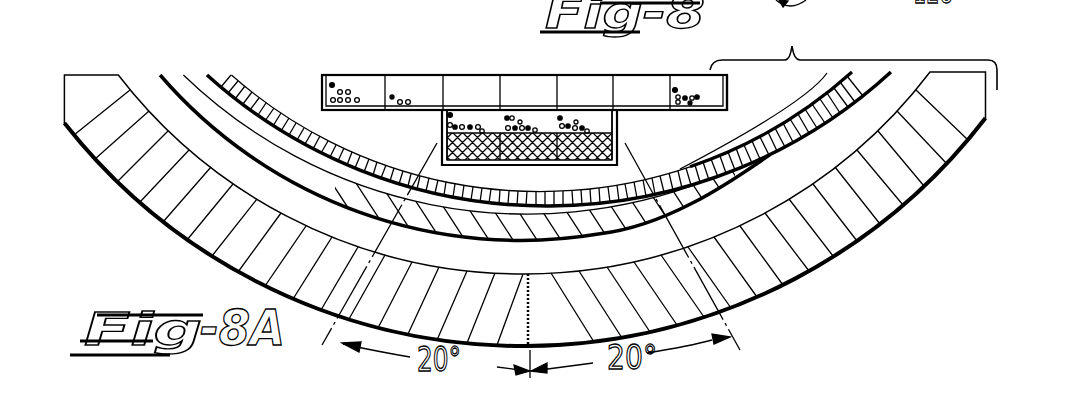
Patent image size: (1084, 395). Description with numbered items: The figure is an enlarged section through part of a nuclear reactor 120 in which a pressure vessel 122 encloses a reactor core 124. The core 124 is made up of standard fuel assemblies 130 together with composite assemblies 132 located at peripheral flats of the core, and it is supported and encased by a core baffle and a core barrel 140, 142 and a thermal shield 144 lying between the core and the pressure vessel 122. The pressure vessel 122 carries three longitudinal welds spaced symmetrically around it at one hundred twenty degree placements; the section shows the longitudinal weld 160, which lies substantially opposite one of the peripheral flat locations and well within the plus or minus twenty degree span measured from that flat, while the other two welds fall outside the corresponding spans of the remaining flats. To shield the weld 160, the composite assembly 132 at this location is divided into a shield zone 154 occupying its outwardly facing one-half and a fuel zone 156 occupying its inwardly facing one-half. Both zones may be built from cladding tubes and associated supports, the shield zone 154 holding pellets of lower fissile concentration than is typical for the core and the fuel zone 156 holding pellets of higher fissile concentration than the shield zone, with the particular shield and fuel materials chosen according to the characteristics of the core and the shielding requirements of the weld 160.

The nuclear reactor 120 is at (523, 187).
The pressure vessel 122 is at (93, 93).
The reactor core 124 is at (460, 56).
The standard fuel assemblies 130 is at (453, 80).
The composite assembly 132 is at (527, 112).
The tray end wall 140 is at (722, 110).
The core barrel 142 is at (221, 80).
The thermal shield 144 is at (188, 84).
The shield zone 154 is at (573, 165).
The fuel zone 156 is at (440, 118).
The longitudinal weld 160 is at (532, 305).